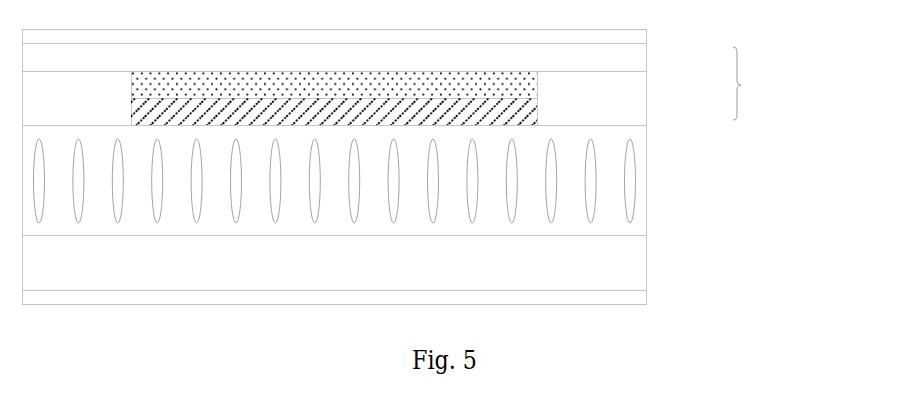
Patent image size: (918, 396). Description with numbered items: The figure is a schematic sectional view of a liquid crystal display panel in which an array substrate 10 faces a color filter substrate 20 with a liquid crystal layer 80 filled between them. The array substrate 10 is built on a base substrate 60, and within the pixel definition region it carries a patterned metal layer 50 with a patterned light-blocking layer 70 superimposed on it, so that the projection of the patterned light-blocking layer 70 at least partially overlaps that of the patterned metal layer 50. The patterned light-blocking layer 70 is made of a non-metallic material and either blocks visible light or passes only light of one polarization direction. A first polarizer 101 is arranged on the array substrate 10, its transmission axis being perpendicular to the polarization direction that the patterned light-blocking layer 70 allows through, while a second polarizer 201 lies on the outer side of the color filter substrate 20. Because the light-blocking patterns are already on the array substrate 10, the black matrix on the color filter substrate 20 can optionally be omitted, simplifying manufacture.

The first polarizer 101 is at (608, 34).
The base substrate 60 is at (608, 60).
The patterned light-blocking layer 70 is at (537, 86).
The patterned metal layer 50 is at (537, 110).
The array substrate 10 is at (750, 83).
The liquid crystal layer 80 is at (600, 228).
The color filter substrate 20 is at (600, 264).
The second polarizer 201 is at (608, 300).